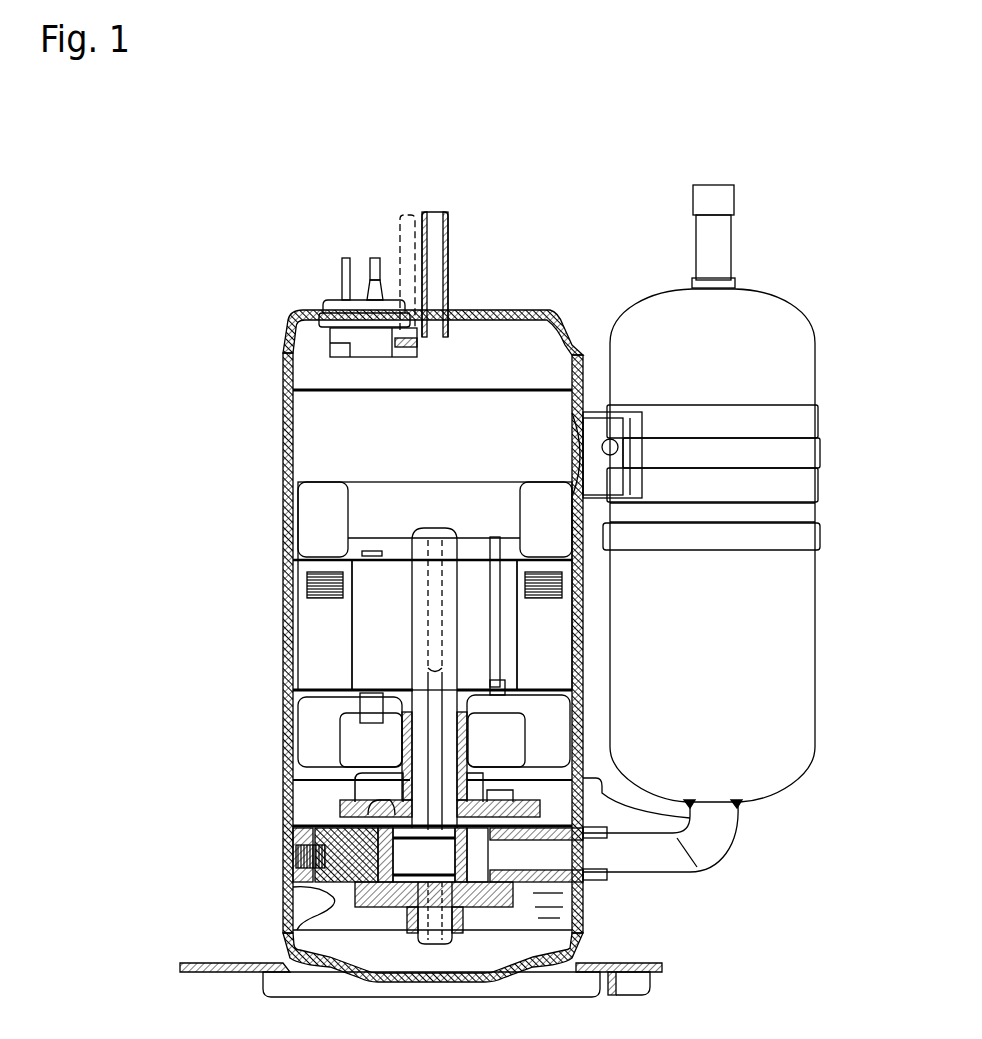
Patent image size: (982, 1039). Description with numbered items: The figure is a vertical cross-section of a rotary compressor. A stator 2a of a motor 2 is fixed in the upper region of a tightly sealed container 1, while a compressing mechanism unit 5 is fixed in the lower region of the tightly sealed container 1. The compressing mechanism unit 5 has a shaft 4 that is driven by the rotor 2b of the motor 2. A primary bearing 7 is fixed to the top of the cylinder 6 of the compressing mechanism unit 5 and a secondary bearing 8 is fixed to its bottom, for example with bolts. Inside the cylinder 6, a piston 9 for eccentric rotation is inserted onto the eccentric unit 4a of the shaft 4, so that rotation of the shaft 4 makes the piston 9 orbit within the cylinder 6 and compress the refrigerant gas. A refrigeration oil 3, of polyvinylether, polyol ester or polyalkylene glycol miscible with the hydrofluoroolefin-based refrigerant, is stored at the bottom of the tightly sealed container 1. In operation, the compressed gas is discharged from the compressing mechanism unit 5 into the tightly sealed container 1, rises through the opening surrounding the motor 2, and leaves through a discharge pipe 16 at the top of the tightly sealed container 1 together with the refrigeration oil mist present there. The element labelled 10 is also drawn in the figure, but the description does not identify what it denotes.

The tightly sealed container 1 is at (285, 388).
The motor 2 is at (331, 566).
The stator 2a is at (297, 503).
The rotor 2b is at (373, 587).
The refrigeration oil 3 is at (533, 907).
The shaft 4 is at (417, 692).
The eccentric unit 4a is at (305, 888).
The compressing mechanism unit 5 is at (260, 777).
The cylinder 6 is at (547, 884).
The primary bearing 7 is at (665, 812).
The secondary bearing 8 is at (481, 907).
The piston 9 is at (345, 810).
The sub bearing plate 10 is at (335, 905).
The discharge pipe 16 is at (446, 247).